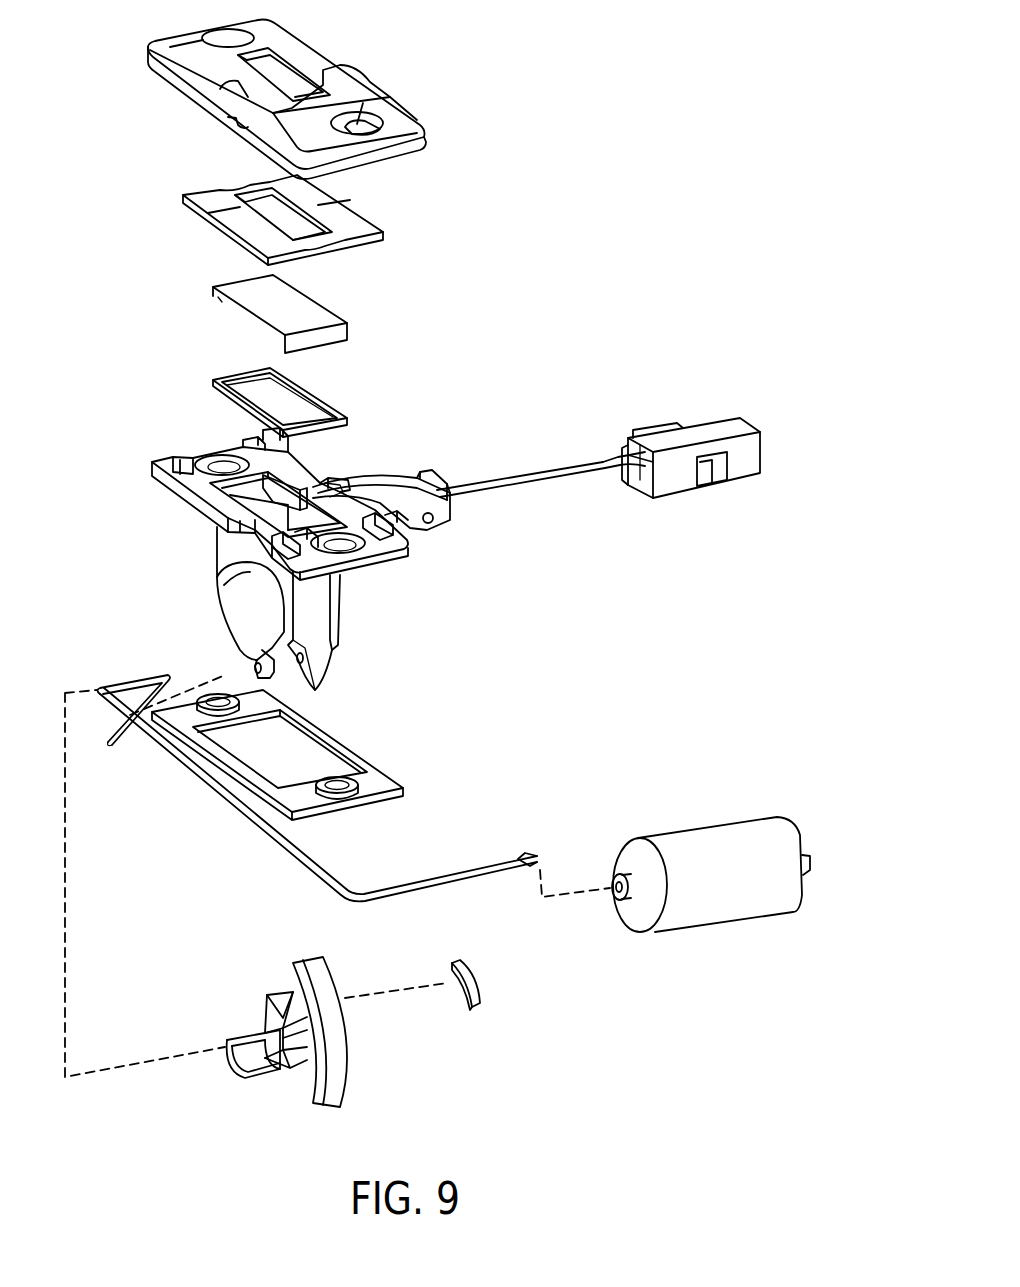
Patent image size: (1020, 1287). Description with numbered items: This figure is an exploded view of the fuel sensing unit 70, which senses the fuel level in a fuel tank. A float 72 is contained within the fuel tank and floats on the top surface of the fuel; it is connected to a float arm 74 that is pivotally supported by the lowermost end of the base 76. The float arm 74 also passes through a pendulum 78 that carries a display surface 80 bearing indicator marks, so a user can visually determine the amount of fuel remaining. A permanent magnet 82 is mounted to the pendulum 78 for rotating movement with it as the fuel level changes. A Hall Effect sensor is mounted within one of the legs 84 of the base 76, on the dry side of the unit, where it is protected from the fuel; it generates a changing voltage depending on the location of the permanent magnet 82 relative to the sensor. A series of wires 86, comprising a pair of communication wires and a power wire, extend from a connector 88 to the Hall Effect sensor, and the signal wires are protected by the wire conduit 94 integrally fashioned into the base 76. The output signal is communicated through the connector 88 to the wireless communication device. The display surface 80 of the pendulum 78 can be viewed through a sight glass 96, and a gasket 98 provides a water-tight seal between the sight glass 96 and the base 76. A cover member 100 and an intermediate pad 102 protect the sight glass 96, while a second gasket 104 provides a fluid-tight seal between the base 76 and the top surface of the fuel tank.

The fuel sensing unit 70 is at (688, 308).
The float 72 is at (730, 838).
The float arm 74 is at (467, 880).
The base 76 is at (195, 537).
The pendulum 78 is at (272, 1020).
The display surface 80 is at (342, 1062).
The permanent magnet 82 is at (468, 980).
The legs 84 is at (337, 611).
The wires 86 is at (505, 482).
The connector 88 is at (740, 470).
The wire conduit 94 is at (385, 500).
The sight glass 96 is at (222, 300).
The gasket 98 is at (232, 395).
The cover member 100 is at (205, 87).
The intermediate pad 102 is at (352, 245).
The gasket 104 is at (325, 745).